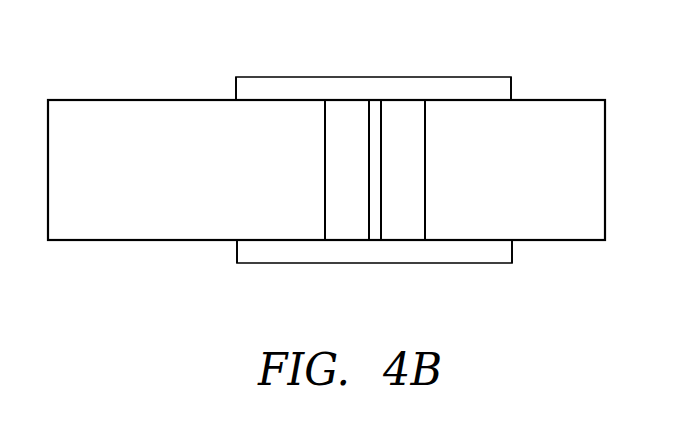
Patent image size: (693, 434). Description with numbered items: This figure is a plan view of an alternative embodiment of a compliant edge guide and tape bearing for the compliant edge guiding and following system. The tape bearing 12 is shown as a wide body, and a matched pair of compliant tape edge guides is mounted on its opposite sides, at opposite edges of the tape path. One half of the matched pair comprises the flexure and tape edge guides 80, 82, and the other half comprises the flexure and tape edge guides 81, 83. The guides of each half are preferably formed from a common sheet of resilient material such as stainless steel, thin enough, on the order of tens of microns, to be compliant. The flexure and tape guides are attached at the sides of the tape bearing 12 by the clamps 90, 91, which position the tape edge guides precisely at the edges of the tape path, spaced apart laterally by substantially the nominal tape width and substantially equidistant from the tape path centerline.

The tape bearing 12 is at (606, 172).
The flexure and tape edge guide 80 is at (485, 98).
The flexure and tape edge guide 81 is at (515, 243).
The flexure and tape edge guide 82 is at (272, 97).
The flexure and tape edge guide 83 is at (276, 245).
The clamp 90 is at (372, 75).
The clamp 91 is at (380, 265).